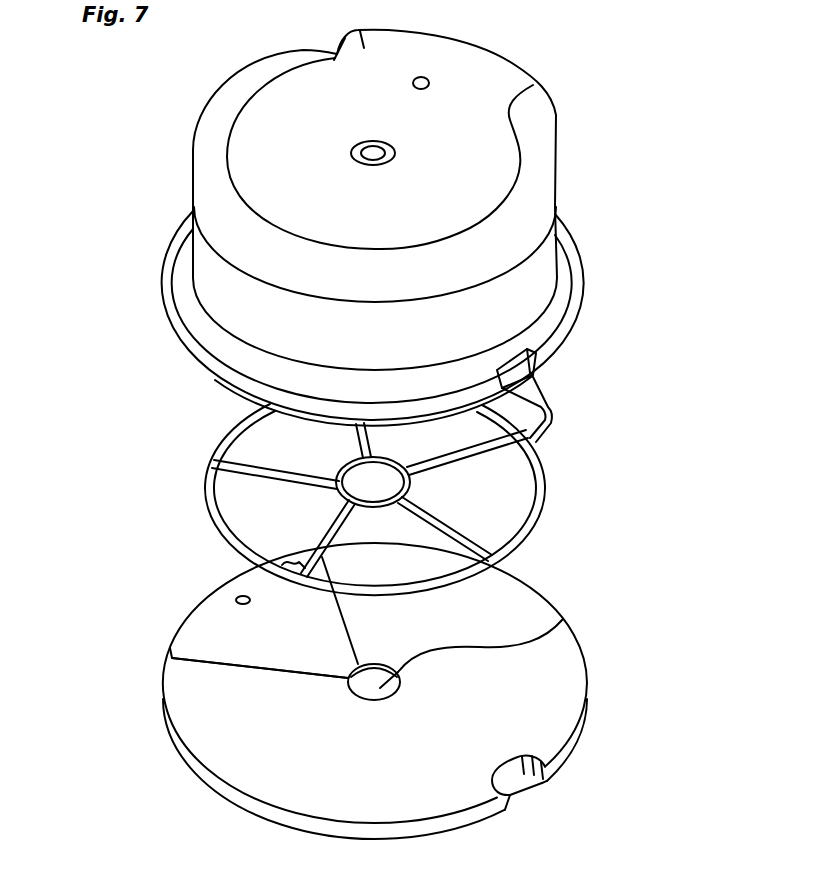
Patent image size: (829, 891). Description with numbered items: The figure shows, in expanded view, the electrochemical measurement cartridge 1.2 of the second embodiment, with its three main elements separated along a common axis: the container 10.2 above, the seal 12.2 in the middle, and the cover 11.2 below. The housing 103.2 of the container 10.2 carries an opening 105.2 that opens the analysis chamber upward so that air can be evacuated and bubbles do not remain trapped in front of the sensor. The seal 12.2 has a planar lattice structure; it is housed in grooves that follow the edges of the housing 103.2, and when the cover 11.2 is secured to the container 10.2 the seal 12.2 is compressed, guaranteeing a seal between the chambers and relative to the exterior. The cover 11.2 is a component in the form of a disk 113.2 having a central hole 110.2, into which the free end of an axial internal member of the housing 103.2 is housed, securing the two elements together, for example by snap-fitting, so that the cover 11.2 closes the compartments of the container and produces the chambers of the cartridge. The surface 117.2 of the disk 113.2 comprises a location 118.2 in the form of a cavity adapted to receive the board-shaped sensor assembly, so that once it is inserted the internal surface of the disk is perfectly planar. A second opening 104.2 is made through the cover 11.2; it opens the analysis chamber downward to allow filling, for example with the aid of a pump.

The cartridge 1.2 is at (605, 832).
The container 10.2 is at (140, 240).
The housing 103.2 is at (540, 257).
The opening 105.2 is at (426, 84).
The seal 12.2 is at (205, 490).
The cover 11.2 is at (137, 681).
The surface 117.2 is at (560, 683).
The central hole 110.2 is at (560, 623).
The second opening 104.2 is at (247, 597).
The location 118.2 is at (240, 637).
The disk 113.2 is at (163, 731).